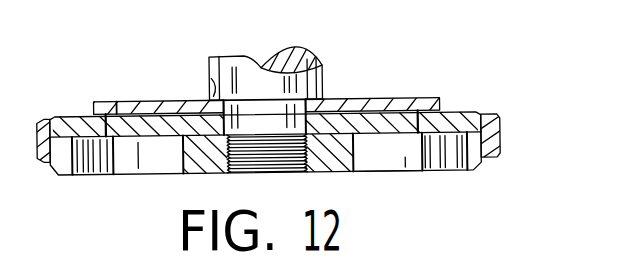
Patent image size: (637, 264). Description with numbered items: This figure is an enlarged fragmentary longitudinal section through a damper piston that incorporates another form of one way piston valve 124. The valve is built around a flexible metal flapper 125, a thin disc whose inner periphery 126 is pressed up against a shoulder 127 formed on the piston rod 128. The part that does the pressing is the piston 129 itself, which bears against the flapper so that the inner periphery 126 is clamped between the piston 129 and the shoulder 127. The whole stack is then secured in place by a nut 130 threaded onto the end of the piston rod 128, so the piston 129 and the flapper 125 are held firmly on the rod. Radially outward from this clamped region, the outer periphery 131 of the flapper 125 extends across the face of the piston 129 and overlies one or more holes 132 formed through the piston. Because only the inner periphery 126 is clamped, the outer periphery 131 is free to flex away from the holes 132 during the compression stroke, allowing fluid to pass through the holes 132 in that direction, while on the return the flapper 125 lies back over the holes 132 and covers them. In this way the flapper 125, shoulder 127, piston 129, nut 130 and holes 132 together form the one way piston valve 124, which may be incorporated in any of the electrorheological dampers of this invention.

The one way piston valve 124 is at (431, 82).
The flexible metal flapper 125 is at (148, 101).
The inner periphery 126 is at (214, 88).
The shoulder 127 is at (324, 88).
The piston rod 128 is at (258, 73).
The piston 129 is at (389, 128).
The nut 130 is at (195, 167).
The outer periphery 131 is at (117, 101).
The holes 132 is at (109, 136).